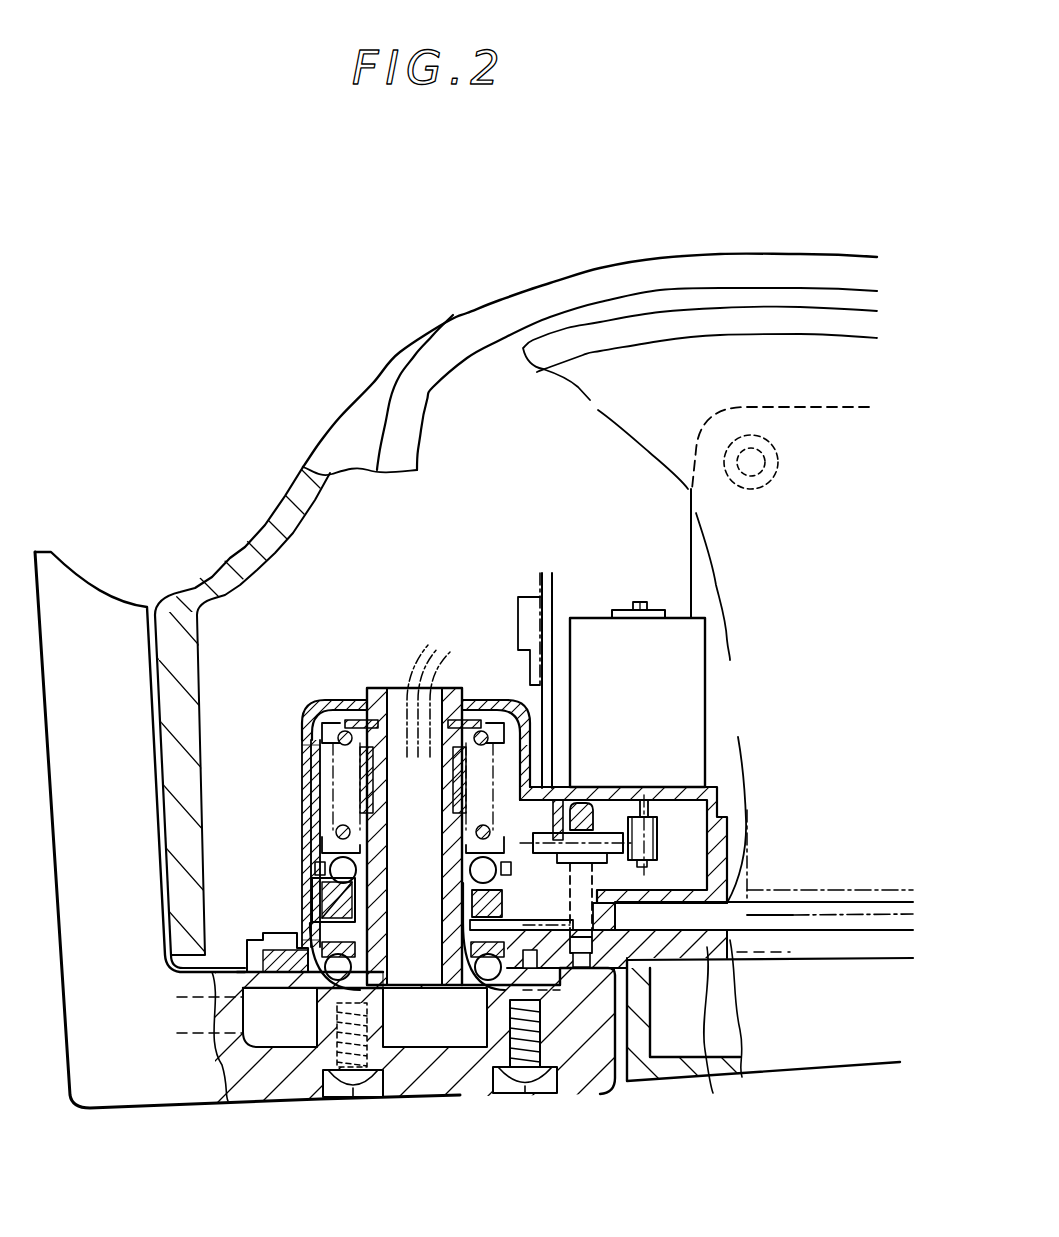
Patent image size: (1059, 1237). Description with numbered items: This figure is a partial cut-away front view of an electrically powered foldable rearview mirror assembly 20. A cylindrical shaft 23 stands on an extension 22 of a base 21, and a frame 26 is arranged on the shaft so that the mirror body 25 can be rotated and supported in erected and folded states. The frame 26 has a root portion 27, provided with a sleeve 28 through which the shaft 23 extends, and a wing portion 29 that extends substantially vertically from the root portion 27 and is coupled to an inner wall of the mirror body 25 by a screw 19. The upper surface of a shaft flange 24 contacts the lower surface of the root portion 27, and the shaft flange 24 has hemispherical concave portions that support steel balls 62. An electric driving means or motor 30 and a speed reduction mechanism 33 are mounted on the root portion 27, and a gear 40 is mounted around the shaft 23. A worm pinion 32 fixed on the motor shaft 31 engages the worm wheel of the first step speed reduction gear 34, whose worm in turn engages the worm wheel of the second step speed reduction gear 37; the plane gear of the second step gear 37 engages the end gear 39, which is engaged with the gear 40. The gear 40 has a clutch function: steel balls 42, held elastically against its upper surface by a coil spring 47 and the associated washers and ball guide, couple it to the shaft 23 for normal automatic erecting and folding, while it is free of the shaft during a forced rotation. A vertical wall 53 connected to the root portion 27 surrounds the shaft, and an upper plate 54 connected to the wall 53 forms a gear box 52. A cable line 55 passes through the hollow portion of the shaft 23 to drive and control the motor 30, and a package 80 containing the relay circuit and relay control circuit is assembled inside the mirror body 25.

The screw 19 is at (742, 448).
The electrically powered foldable rearview mirror assembly 20 is at (700, 254).
The base 21 is at (104, 622).
The extension 22 is at (258, 1068).
The cylindrical shaft 23 is at (390, 687).
The shaft flange 24 is at (293, 983).
The mirror body 25 is at (440, 352).
The frame 26 is at (710, 1094).
The root portion 27 is at (255, 947).
The sleeve 28 is at (360, 930).
The wing portion 29 is at (691, 552).
The electric driving means (motor) 30 is at (598, 635).
The motor shaft 31 is at (652, 808).
The worm pinion 32 is at (650, 855).
The speed reduction mechanism 33 is at (510, 797).
The first step speed reduction gear 34 is at (568, 832).
The second step speed reduction gear 37 is at (584, 866).
The end gear 39 is at (526, 907).
The gear 40 is at (330, 907).
The steel balls 42 is at (330, 867).
The coil spring 47 is at (318, 757).
The gear box 52 is at (305, 738).
The vertical wall 53 is at (305, 833).
The upper plate 54 is at (305, 777).
The cable line 55 is at (427, 643).
The steel balls 62 is at (486, 973).
The package 80 is at (518, 573).